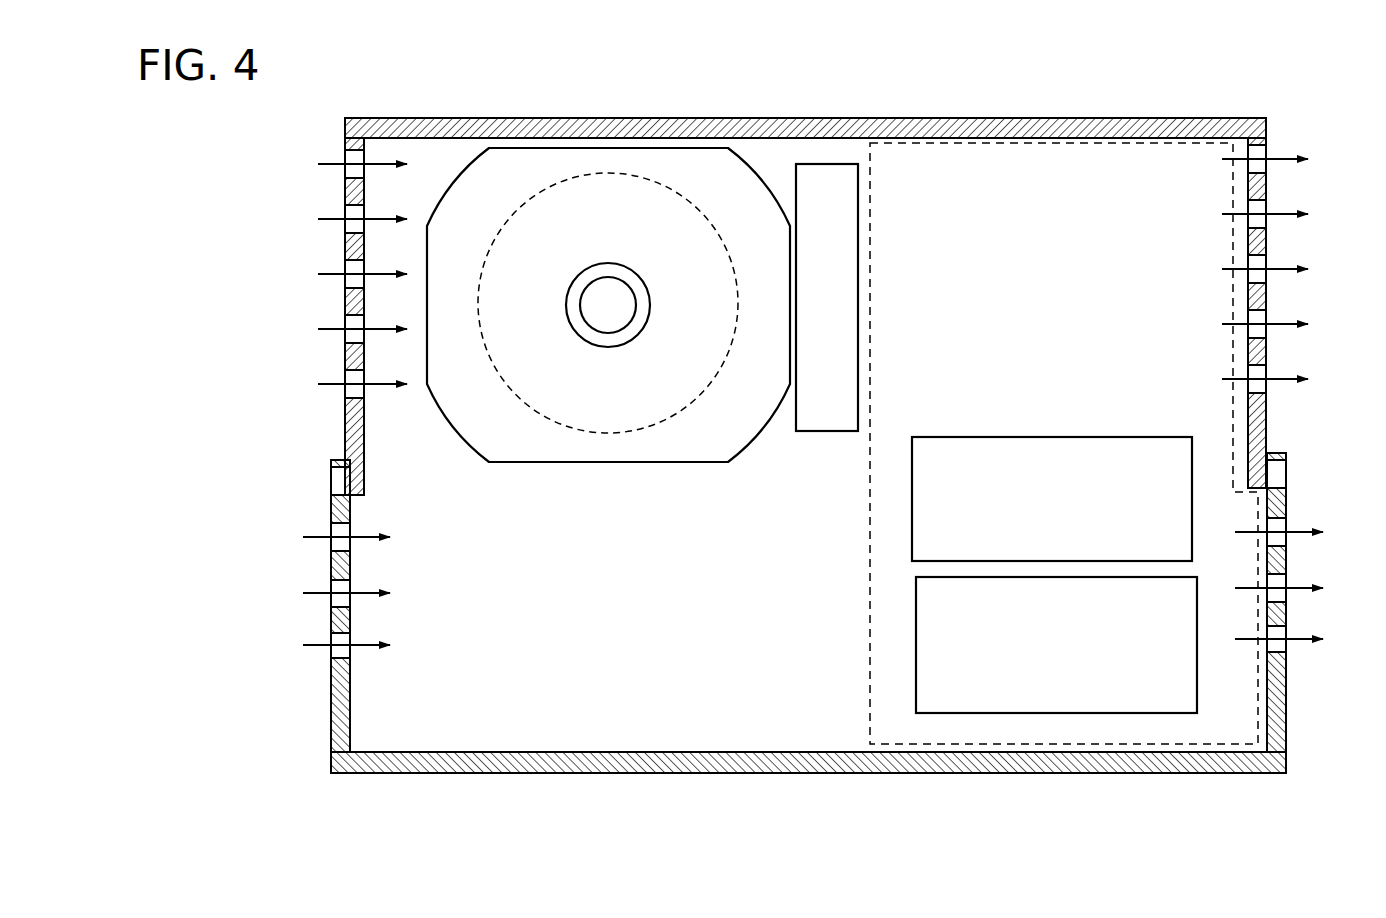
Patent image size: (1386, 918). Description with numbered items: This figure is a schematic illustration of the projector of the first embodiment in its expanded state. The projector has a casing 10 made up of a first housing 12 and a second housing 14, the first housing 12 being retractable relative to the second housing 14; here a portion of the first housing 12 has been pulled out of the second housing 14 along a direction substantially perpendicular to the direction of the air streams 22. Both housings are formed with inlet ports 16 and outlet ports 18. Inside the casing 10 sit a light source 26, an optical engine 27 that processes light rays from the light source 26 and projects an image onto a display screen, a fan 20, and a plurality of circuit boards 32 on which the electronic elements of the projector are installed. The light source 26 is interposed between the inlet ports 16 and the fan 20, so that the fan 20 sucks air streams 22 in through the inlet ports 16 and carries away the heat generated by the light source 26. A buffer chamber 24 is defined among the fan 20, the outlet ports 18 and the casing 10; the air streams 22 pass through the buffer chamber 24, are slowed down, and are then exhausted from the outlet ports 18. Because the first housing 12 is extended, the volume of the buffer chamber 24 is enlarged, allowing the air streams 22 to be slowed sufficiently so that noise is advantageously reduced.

The casing 10 is at (220, 430).
The first housing 12 is at (345, 422).
The second housing 14 is at (330, 507).
The inlet ports 16 is at (343, 322).
The outlet ports 18 is at (1257, 156).
The fan 20 is at (818, 187).
The air streams 22 is at (333, 277).
The buffer chamber 24 is at (900, 143).
The light source 26 is at (516, 148).
The optical engine 27 is at (643, 180).
The circuit boards 32 is at (988, 560).